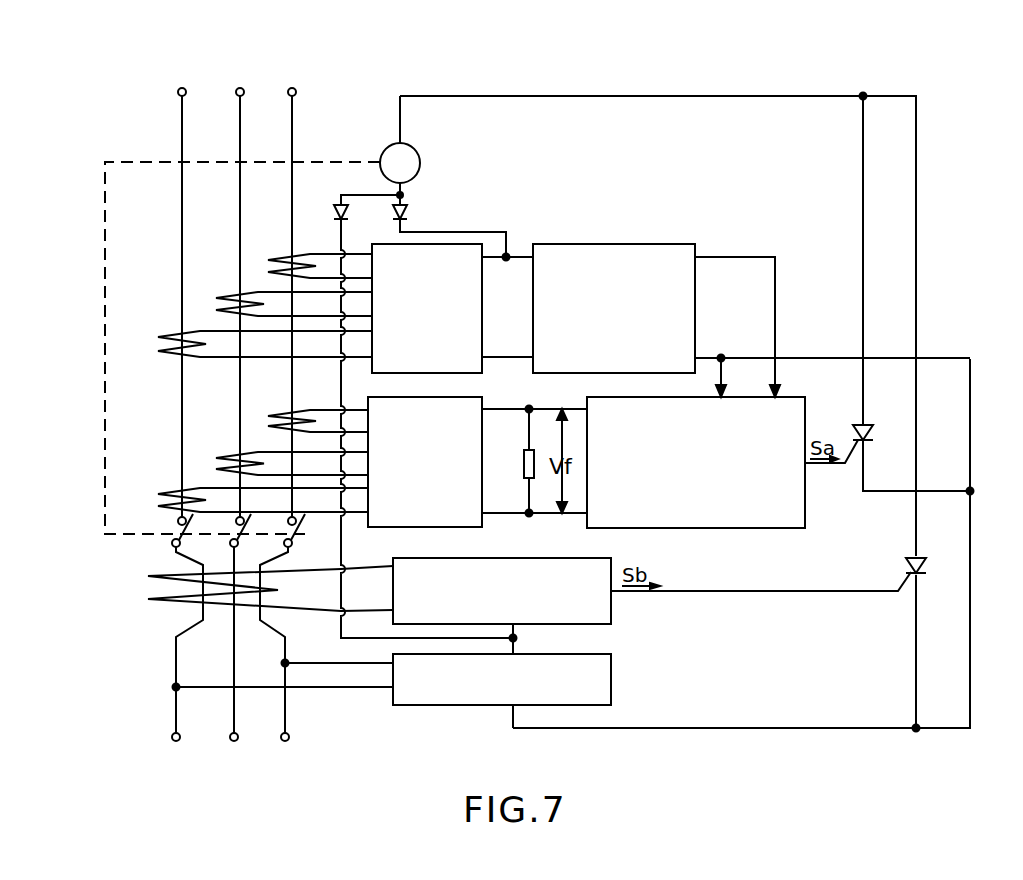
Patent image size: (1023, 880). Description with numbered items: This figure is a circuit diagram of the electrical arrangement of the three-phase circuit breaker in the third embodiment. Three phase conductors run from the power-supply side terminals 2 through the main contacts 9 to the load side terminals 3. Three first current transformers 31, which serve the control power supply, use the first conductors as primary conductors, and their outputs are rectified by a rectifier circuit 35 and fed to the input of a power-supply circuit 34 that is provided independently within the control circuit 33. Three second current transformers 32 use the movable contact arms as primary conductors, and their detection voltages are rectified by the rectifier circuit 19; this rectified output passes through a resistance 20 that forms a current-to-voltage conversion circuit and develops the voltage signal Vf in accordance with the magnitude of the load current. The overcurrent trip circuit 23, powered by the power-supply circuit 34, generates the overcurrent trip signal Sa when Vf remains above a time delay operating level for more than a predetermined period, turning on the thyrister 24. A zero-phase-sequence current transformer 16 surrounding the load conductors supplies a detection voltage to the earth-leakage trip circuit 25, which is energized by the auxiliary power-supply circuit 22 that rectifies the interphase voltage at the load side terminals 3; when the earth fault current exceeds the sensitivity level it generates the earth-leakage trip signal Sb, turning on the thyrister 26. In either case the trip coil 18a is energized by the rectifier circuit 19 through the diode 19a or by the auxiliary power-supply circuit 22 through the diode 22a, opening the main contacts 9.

The power-supply side terminal 2 is at (180, 89).
The load side terminal 3 is at (174, 741).
The main contact 9 is at (172, 546).
The zero-phase-sequence current transformer 16 is at (155, 604).
The trip coil 18a is at (420, 157).
The rectifier circuit 19 is at (425, 527).
The diode 19a is at (410, 213).
The resistance 20 is at (523, 460).
The auxiliary power-supply circuit 22 is at (611, 683).
The diode 22a is at (336, 210).
The overcurrent trip circuit 23 is at (805, 505).
The thyrister 24 is at (870, 432).
The earth-leakage trip circuit 25 is at (611, 608).
The thyrister 26 is at (922, 570).
The first current transformer 31 is at (278, 255).
The second current transformer 32 is at (276, 416).
The control circuit 33 is at (485, 718).
The power-supply circuit 34 is at (603, 244).
The rectifier circuit 35 is at (482, 300).